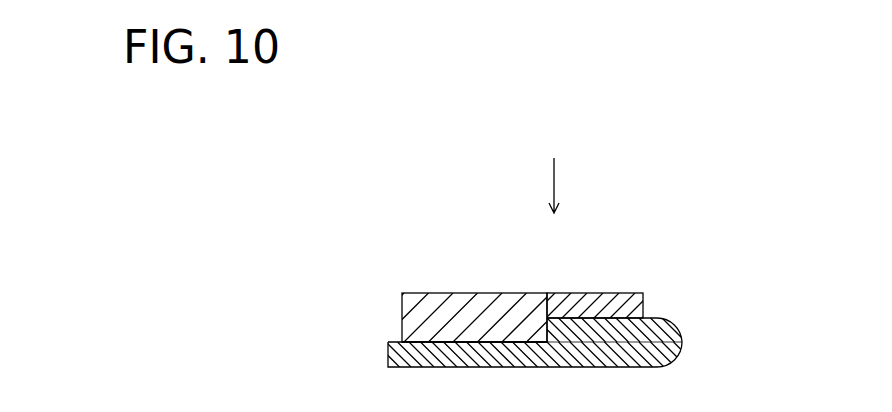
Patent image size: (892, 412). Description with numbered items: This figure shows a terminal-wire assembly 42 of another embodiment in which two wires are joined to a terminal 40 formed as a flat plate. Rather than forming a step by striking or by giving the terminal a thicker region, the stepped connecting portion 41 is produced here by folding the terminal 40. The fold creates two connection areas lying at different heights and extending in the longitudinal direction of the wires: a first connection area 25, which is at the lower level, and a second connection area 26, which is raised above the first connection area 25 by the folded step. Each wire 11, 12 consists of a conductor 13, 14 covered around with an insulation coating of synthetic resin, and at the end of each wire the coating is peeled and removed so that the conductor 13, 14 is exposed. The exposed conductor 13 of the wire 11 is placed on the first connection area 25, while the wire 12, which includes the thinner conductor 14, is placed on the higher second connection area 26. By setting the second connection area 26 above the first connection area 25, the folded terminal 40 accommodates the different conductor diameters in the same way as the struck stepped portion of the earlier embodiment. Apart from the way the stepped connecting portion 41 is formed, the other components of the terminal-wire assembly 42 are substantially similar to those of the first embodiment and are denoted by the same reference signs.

The conductor 13 is at (477, 280).
The wire 11 is at (420, 293).
The conductor 14 is at (637, 304).
The wire 12 is at (643, 312).
The first connection area 25 is at (458, 345).
The stepped connecting portion 41 is at (512, 342).
The second connection area 26 is at (602, 323).
The terminal 40 is at (670, 348).
The terminal-wire assembly 42 is at (568, 153).